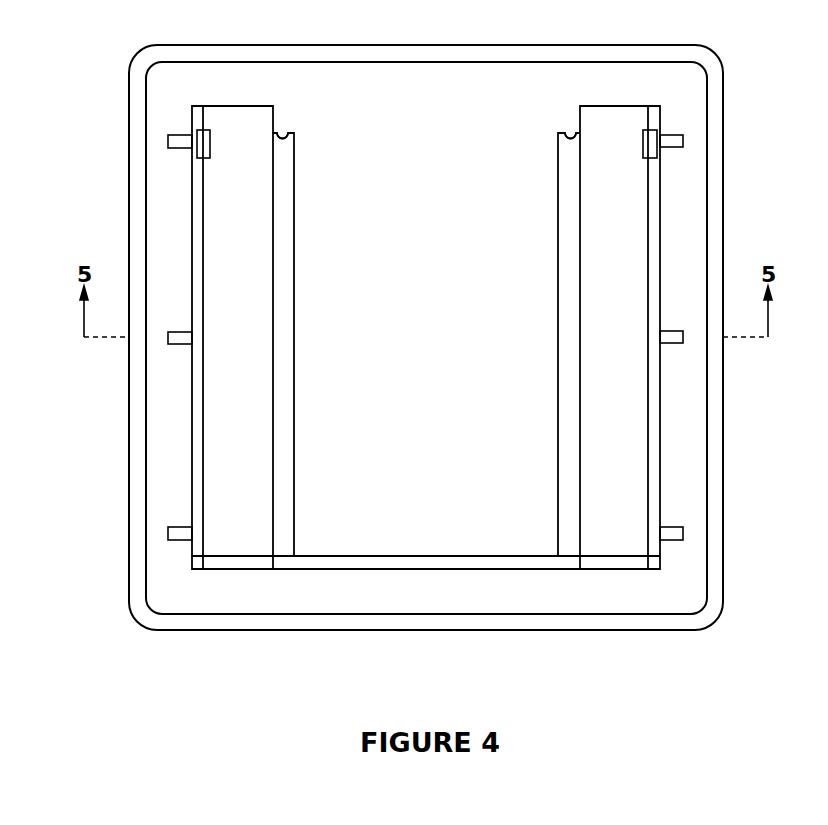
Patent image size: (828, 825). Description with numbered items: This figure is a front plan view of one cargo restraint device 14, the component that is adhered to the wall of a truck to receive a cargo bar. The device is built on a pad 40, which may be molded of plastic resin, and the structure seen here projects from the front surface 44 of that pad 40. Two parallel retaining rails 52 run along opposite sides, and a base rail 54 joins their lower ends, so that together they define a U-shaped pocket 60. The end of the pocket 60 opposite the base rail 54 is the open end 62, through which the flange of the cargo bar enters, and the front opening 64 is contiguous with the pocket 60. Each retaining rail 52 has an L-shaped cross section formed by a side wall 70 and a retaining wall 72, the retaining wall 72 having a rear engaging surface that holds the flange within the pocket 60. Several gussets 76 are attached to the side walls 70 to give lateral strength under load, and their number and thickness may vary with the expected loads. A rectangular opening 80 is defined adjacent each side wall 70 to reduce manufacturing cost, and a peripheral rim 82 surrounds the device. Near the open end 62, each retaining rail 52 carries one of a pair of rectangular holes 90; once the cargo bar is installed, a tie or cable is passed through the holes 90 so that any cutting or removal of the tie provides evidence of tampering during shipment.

The cargo restraint device 14 is at (118, 454).
The pad 40 is at (638, 72).
The front surface 44 is at (693, 270).
The retaining rails 52 is at (192, 432).
The base rail 54 is at (414, 558).
The pocket 60 is at (304, 558).
The open end 62 is at (412, 95).
The front opening 64 is at (578, 427).
The side wall 70 is at (192, 272).
The retaining wall 72 is at (253, 281).
The gussets 76 is at (182, 134).
The rectangular opening 80 is at (278, 133).
The peripheral rim 82 is at (723, 600).
The rectangular holes 90 is at (197, 153).